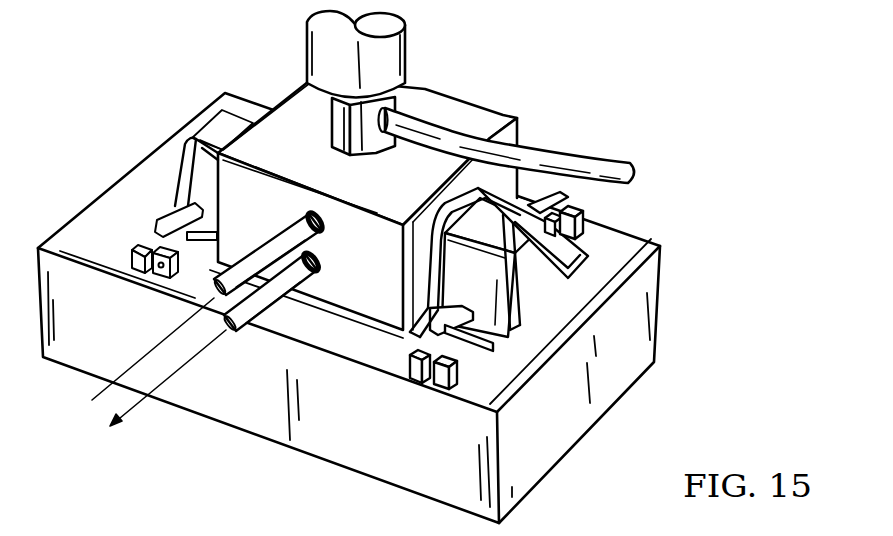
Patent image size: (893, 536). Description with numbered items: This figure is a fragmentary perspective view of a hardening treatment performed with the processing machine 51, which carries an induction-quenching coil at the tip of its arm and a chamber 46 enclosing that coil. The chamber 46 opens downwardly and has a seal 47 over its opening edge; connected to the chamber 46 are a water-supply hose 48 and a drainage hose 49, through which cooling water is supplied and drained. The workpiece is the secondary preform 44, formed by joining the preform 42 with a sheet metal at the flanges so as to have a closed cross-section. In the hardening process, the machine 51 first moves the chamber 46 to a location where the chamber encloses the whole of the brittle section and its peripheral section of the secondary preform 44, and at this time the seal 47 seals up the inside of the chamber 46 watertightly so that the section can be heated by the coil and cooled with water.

The preform 42 is at (588, 220).
The secondary preform 44 is at (580, 288).
The chamber 46 is at (478, 116).
The seal 47 is at (391, 326).
The water-supply hose 48 is at (283, 247).
The drainage hose 49 is at (269, 306).
The machine 51 is at (407, 42).